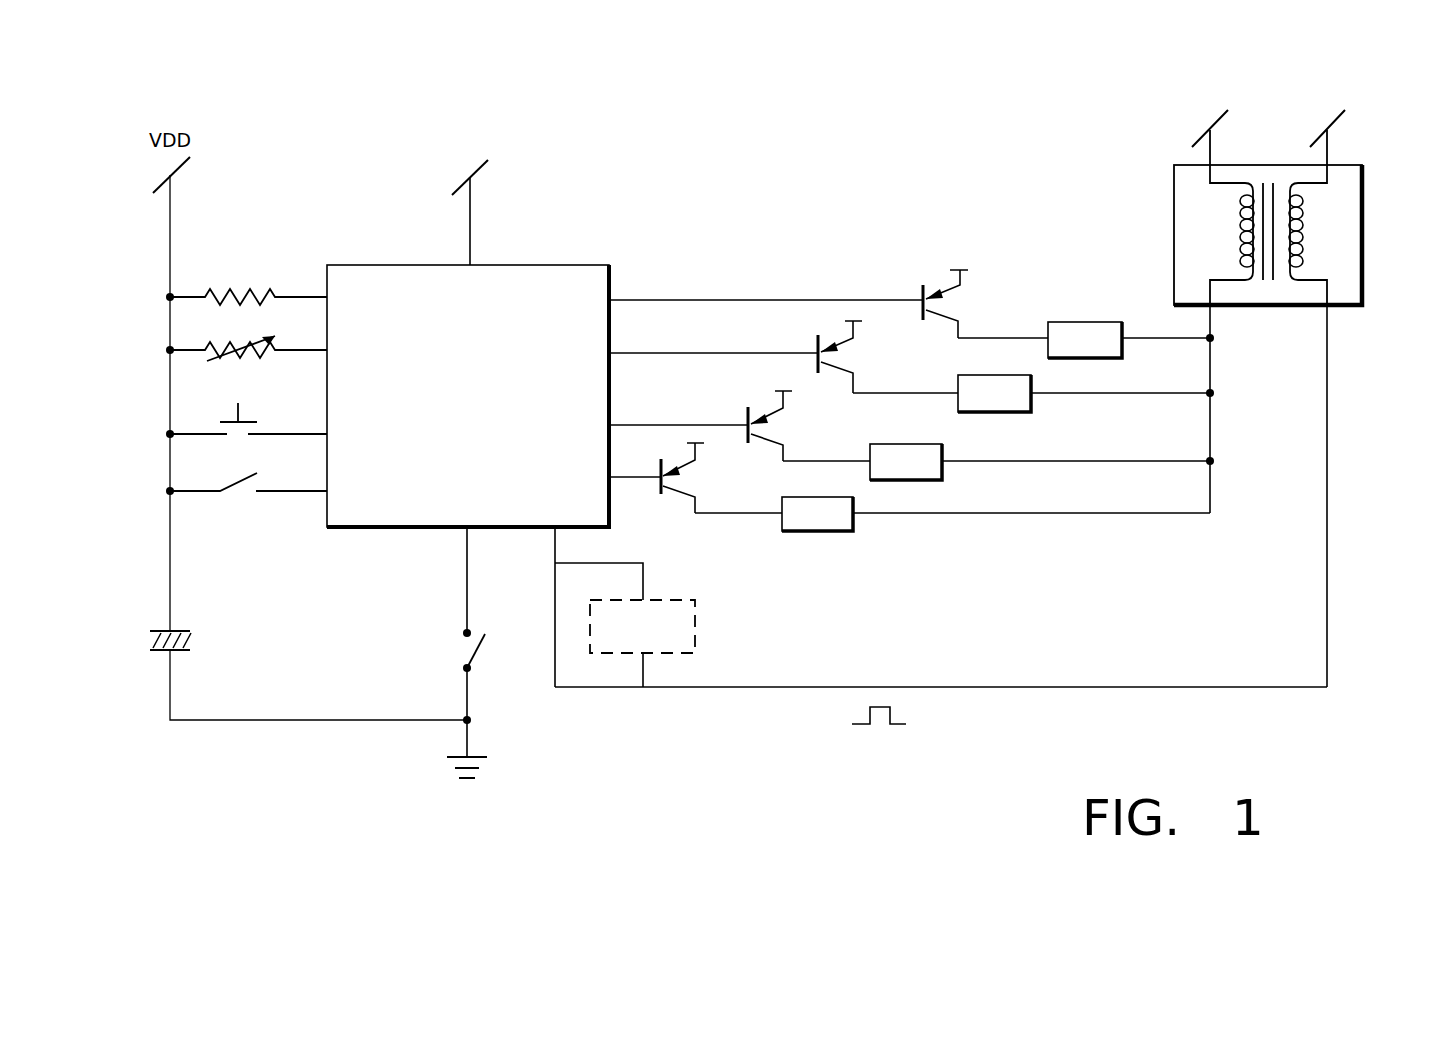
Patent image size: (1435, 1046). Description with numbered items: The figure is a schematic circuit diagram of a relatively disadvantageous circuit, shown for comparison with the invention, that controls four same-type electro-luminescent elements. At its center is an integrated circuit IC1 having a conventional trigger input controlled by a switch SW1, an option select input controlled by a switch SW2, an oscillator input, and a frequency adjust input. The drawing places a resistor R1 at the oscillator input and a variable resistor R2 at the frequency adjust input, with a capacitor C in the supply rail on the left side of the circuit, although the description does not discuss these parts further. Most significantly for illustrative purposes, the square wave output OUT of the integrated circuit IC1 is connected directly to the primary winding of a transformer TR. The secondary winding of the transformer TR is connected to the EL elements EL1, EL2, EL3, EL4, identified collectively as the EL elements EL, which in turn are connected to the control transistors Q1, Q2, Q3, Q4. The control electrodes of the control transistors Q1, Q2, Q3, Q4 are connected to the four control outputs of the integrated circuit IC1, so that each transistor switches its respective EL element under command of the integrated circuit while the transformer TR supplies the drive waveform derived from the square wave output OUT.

The resistor R1 is at (246, 280).
The variable resistor R2 is at (246, 336).
The switch SW1 is at (207, 426).
The switch SW2 is at (207, 489).
The capacitor C is at (181, 643).
The integrated circuit IC1 is at (488, 263).
The control transistor Q1 is at (788, 300).
The control transistor Q2 is at (735, 353).
The control transistor Q3 is at (700, 420).
The control transistor Q4 is at (656, 478).
The EL element EL1 is at (1084, 340).
The EL element EL2 is at (1031, 393).
The EL element EL3 is at (996, 462).
The EL element EL4 is at (952, 514).
The EL elements EL is at (815, 538).
The square wave output OUT is at (625, 607).
The transformer TR is at (1350, 272).